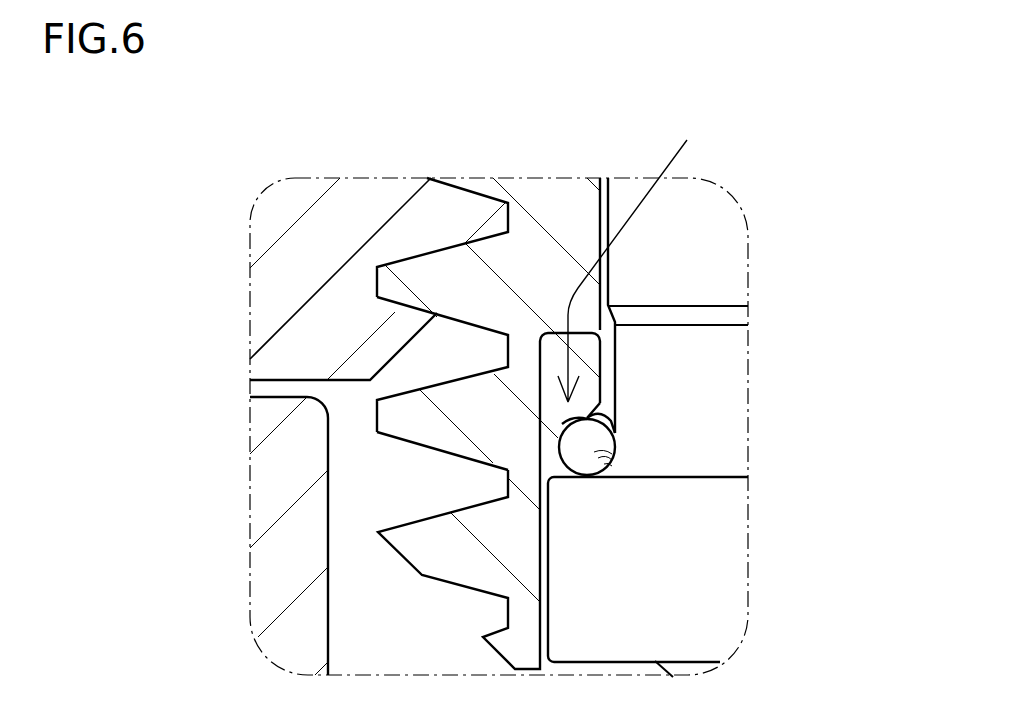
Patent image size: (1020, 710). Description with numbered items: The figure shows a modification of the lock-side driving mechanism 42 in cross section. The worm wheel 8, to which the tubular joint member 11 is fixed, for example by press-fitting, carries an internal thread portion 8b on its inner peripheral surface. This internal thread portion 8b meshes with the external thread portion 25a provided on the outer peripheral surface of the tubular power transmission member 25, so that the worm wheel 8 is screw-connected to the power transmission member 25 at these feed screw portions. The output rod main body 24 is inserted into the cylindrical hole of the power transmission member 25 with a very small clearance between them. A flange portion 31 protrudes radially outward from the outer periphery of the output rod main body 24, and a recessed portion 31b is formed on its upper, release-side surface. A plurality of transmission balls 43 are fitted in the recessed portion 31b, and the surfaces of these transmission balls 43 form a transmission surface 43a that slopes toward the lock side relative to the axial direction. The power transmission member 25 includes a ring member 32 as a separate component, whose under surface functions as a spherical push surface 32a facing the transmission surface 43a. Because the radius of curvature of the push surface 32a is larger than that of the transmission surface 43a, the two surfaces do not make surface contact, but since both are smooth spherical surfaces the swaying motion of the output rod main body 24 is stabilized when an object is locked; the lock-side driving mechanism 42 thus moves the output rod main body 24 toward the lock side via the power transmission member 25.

The worm wheel 8 is at (295, 222).
The internal thread portion 8b is at (470, 190).
The joint member 11 is at (276, 593).
The output rod main body 24 is at (730, 247).
The power transmission member 25 is at (543, 197).
The external thread portion 25a is at (403, 440).
The flange portion 31 is at (722, 590).
The recessed portion 31b is at (592, 445).
The ring member 32 is at (590, 349).
The push surface 32a is at (600, 436).
The lock-side driving mechanism 42 is at (637, 253).
The transmission balls 43 is at (583, 453).
The transmission surface 43a is at (568, 427).